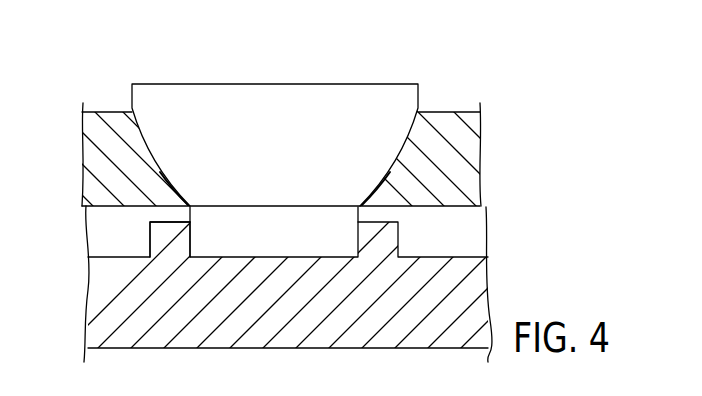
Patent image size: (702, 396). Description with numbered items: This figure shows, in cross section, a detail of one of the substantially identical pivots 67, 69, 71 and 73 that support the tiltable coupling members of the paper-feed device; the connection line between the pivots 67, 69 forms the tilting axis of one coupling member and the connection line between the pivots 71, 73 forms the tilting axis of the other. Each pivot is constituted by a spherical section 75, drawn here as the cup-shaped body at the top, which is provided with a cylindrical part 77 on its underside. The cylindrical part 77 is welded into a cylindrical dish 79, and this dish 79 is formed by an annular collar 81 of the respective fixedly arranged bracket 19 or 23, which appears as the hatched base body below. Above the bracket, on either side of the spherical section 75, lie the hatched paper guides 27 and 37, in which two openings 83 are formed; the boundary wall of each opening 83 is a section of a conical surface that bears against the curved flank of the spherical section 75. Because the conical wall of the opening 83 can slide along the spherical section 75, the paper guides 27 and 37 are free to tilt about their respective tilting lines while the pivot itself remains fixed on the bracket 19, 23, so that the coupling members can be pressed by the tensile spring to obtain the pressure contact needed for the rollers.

The pivot 67 is at (242, 112).
The pivot 69 is at (242, 112).
The pivot 71 is at (242, 112).
The pivot 73 is at (242, 112).
The spherical section 75 is at (318, 97).
The paper guide 27 is at (288, 155).
The paper guide 37 is at (472, 150).
The opening 83 is at (170, 197).
The annular collar 81 is at (163, 235).
The cylindrical dish 79 is at (190, 247).
The cylindrical part 77 is at (263, 245).
The bracket 19 is at (326, 293).
The bracket 23 is at (382, 337).